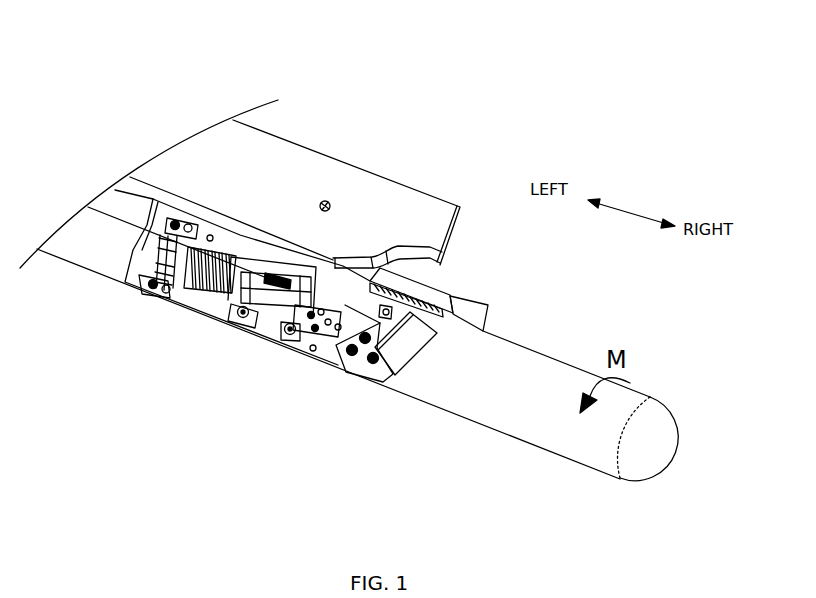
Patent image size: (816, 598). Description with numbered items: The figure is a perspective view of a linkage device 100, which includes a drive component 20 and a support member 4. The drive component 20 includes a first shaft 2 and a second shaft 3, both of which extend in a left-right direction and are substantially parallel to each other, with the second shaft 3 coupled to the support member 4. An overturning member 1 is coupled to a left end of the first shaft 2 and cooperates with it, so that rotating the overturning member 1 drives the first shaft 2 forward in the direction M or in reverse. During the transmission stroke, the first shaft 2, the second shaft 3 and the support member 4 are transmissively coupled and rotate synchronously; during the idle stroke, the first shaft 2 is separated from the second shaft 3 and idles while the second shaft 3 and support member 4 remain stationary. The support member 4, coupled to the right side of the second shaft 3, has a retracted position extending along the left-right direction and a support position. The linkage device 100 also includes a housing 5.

The linkage device 100 is at (143, 70).
The overturning member 1 is at (81, 252).
The drive component 20 is at (247, 320).
The first shaft 2 is at (233, 300).
The second shaft 3 is at (285, 325).
The support member 4 is at (497, 405).
The housing 5 is at (298, 345).